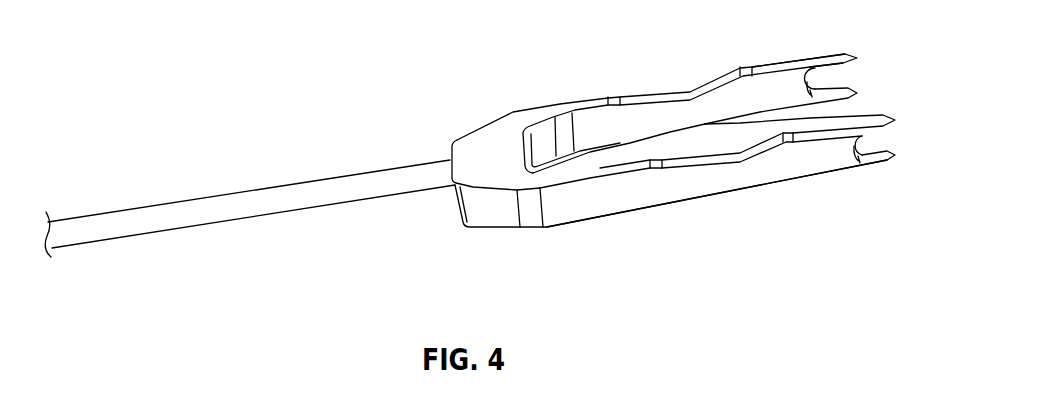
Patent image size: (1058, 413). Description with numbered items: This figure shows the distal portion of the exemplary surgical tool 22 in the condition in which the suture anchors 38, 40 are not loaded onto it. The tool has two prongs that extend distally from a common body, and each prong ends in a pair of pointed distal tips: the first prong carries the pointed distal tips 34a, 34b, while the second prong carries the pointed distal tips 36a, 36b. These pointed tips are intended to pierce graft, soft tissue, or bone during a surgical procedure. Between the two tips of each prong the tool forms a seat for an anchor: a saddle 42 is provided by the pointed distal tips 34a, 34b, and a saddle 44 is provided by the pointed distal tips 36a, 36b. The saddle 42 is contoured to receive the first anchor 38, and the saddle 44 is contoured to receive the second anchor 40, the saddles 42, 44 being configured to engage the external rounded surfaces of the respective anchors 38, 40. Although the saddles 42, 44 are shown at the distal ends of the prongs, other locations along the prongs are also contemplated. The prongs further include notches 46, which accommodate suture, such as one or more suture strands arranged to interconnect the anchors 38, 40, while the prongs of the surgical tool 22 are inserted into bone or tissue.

The surgical tool 22 is at (195, 90).
The pointed distal tip 34a is at (852, 56).
The pointed distal tip 34b is at (860, 96).
The pointed distal tip 36a is at (895, 121).
The pointed distal tip 36b is at (893, 158).
The first anchor 38 is at (600, 130).
The second anchor 40 is at (647, 190).
The saddle 42 is at (845, 76).
The saddle 44 is at (880, 142).
The notches 46 is at (737, 158).